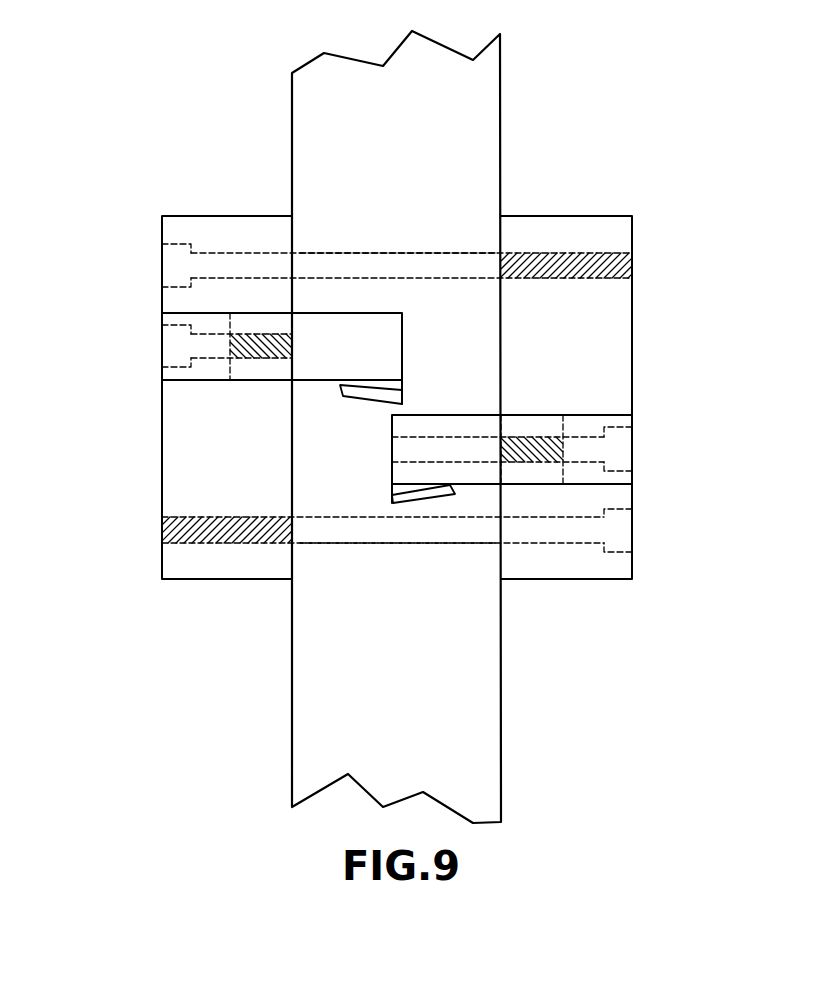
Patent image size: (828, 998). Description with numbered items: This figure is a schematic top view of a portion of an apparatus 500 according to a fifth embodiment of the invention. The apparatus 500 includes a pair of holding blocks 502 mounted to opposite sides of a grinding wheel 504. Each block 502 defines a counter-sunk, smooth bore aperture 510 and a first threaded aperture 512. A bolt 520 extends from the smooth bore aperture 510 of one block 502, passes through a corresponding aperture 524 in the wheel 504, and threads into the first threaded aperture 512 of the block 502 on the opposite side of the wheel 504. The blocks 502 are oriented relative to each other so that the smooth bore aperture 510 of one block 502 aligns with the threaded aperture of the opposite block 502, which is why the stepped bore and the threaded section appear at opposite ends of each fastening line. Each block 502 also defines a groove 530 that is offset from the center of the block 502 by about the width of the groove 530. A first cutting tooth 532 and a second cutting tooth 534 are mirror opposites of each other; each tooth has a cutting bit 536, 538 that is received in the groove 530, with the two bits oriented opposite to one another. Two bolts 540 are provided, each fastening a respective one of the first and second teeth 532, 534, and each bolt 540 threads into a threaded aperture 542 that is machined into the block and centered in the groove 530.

The apparatus 500 is at (156, 134).
The holding block 502 is at (162, 445).
The grinding wheel 504 is at (502, 717).
The smooth bore aperture 510 is at (230, 253).
The first threaded aperture 512 is at (604, 258).
The bolt 520 is at (162, 268).
The aperture 524 is at (408, 262).
The groove 530 is at (172, 380).
The first cutting tooth 532 is at (392, 437).
The second cutting tooth 534 is at (403, 338).
The cutting bit 536 is at (402, 402).
The cutting bit 538 is at (392, 499).
The bolt 540 is at (162, 340).
The threaded aperture 542 is at (257, 352).